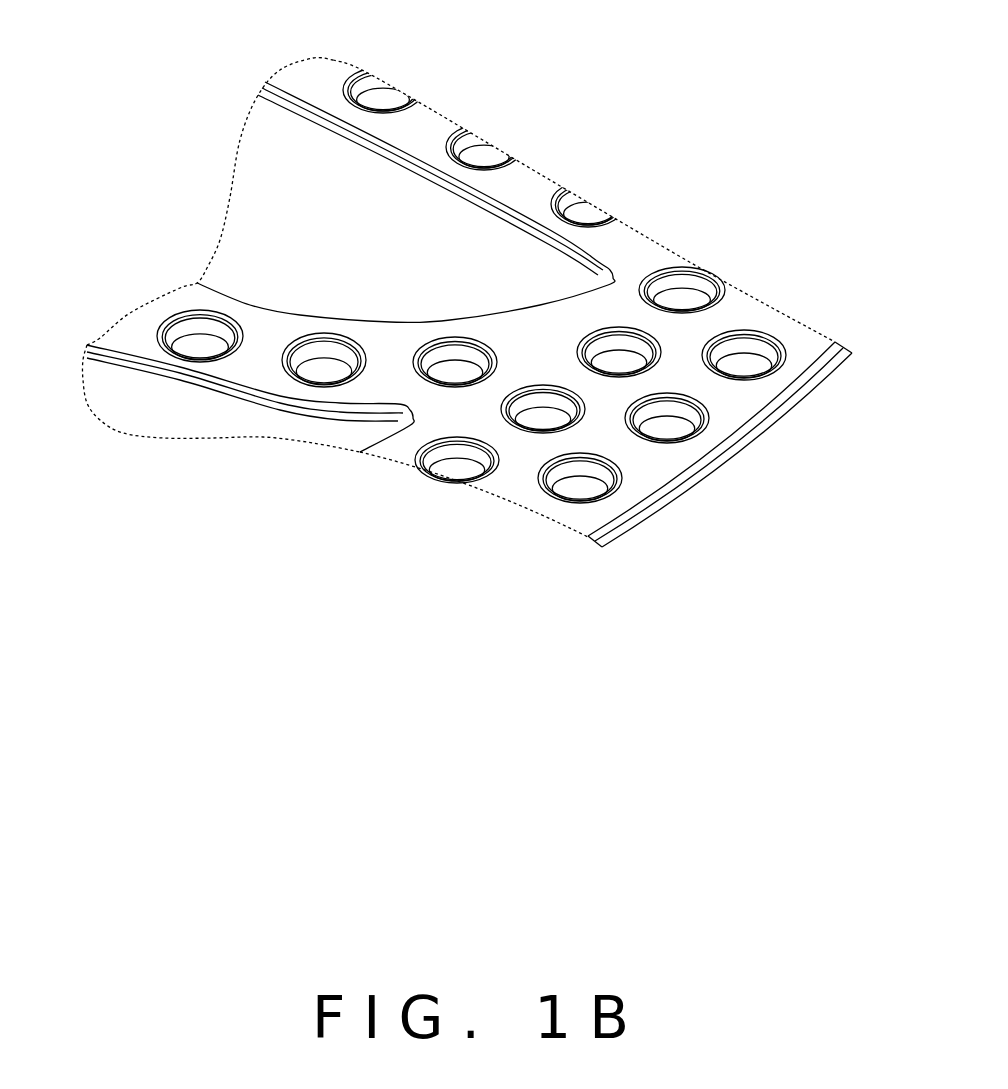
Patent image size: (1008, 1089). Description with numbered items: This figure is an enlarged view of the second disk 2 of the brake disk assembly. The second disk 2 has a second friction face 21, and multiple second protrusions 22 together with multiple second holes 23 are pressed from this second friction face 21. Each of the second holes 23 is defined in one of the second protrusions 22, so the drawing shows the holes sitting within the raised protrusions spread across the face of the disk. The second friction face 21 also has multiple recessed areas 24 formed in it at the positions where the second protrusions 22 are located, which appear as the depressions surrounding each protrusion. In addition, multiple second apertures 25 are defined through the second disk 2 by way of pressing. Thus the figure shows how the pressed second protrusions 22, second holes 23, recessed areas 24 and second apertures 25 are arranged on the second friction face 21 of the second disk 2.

The second disk 2 is at (467, 342).
The second friction face 21 is at (750, 408).
The second protrusions 22 is at (667, 417).
The second holes 23 is at (658, 430).
The recessed areas 24 is at (710, 420).
The second apertures 25 is at (273, 167).